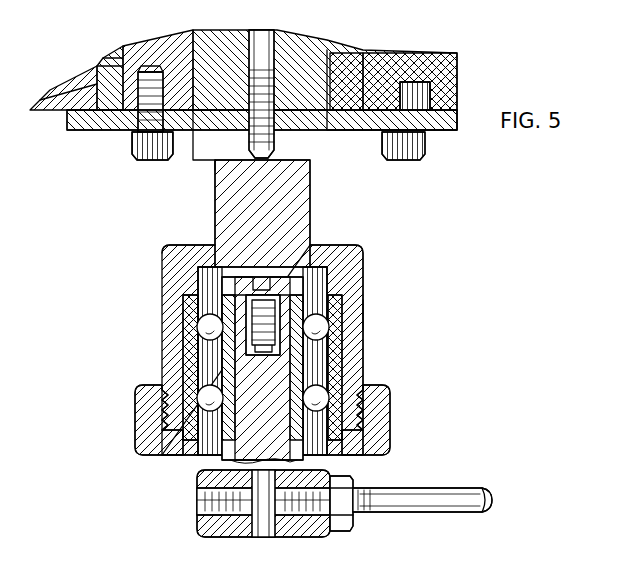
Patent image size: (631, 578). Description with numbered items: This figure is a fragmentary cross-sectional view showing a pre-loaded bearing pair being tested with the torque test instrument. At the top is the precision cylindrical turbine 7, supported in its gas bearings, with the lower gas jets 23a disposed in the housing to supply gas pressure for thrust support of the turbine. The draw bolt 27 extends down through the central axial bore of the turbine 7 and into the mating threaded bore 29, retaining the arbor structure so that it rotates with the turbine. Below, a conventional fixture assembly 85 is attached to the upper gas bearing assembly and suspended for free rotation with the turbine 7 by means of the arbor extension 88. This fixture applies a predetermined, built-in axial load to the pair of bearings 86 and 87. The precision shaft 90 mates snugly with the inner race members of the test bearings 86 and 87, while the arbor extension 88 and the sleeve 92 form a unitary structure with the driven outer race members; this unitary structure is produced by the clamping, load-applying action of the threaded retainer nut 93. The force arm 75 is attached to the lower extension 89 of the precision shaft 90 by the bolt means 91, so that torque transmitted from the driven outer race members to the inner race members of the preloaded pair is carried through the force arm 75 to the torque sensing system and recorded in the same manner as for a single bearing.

The lower gas jets 23a is at (118, 48).
The draw bolt 27 is at (258, 42).
The turbine 7 is at (318, 44).
The threaded bore 29 is at (215, 170).
The arbor extension 88 is at (305, 217).
The sleeve 92 is at (170, 306).
The bearing 86 is at (355, 305).
The fixture assembly 85 is at (410, 318).
The bearing 87 is at (352, 380).
The threaded retainer nut 93 is at (150, 410).
The precision shaft 90 is at (212, 442).
The lower extension 89 is at (260, 518).
The bolt means 91 is at (340, 522).
The force arm 75 is at (445, 498).